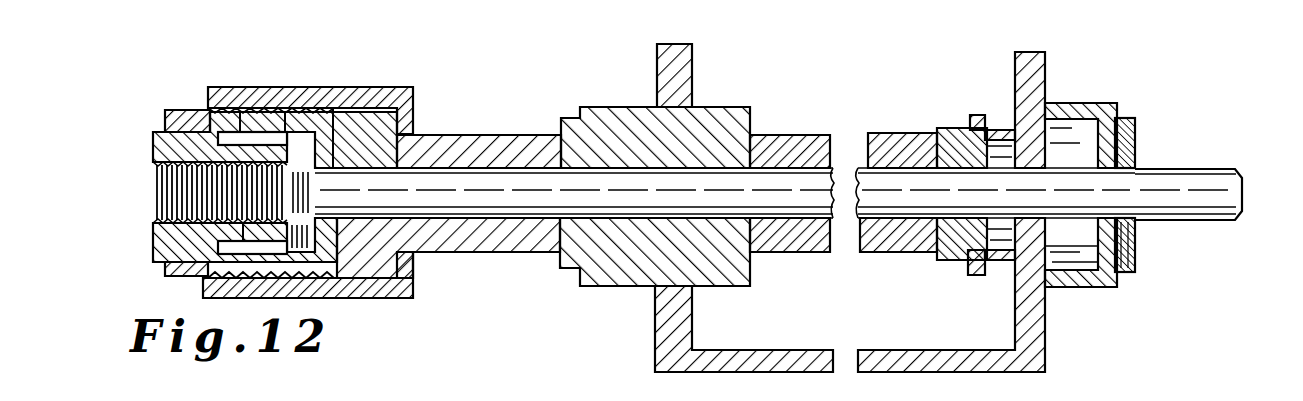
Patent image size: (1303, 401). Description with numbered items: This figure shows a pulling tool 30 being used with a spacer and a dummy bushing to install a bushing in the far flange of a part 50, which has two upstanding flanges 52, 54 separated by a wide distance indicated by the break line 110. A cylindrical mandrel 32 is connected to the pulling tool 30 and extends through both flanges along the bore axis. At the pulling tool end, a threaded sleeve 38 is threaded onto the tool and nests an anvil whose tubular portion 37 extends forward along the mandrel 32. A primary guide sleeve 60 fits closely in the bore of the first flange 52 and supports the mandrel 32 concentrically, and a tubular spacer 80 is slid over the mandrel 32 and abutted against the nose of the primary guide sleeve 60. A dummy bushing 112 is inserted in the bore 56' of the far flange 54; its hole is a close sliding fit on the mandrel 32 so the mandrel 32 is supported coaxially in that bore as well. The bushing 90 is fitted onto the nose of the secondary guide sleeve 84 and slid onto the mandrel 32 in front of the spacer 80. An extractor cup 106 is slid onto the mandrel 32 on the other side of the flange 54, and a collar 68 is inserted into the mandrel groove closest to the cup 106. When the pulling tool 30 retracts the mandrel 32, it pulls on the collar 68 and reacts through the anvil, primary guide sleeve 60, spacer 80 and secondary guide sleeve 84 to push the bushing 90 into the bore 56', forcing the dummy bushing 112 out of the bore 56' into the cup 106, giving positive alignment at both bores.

The pulling tool 30 is at (136, 112).
The threaded sleeve 38 is at (332, 80).
The tubular portion 37 is at (483, 134).
The primary guide sleeve 60 is at (598, 94).
The flange 52 is at (692, 46).
The tubular spacer 80 is at (777, 134).
The break line 110 is at (862, 102).
The secondary guide sleeve 84 is at (950, 134).
The dummy bushing 112 is at (1015, 153).
The bushing 90 is at (973, 275).
The flange 54 is at (1044, 54).
The extractor cup 106 is at (1083, 102).
The bore 56' is at (1086, 288).
The collar 68 is at (1136, 140).
The mandrel 32 is at (1215, 172).
The part 50 is at (1090, 332).